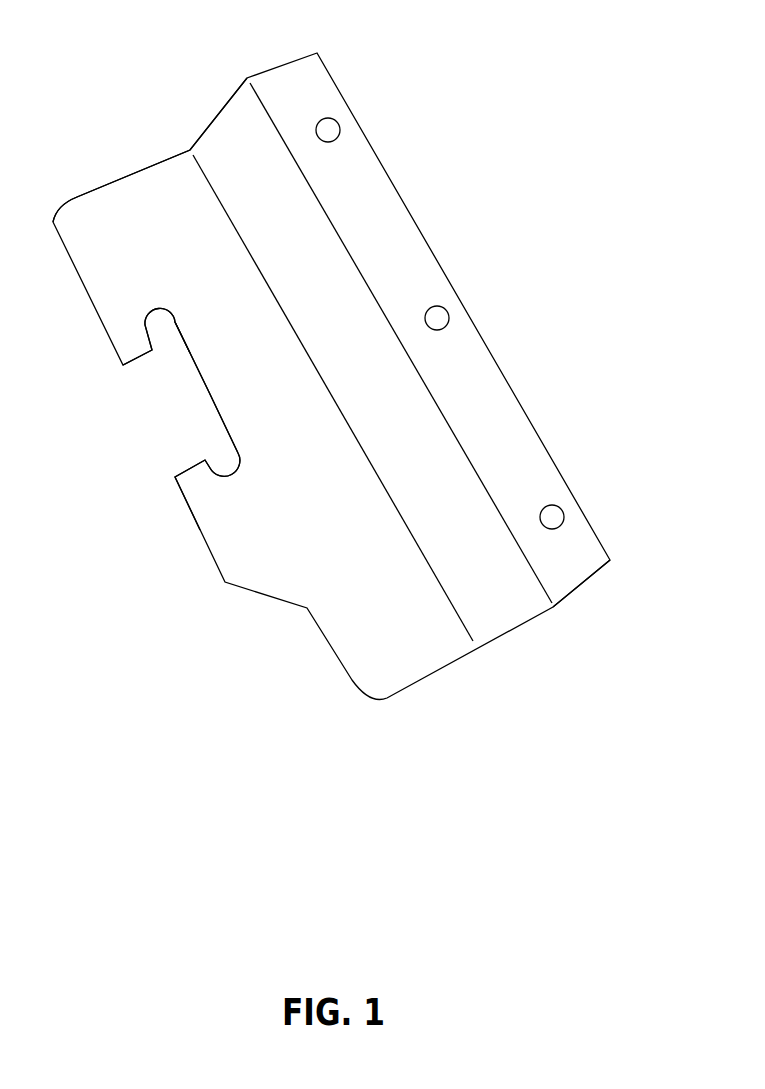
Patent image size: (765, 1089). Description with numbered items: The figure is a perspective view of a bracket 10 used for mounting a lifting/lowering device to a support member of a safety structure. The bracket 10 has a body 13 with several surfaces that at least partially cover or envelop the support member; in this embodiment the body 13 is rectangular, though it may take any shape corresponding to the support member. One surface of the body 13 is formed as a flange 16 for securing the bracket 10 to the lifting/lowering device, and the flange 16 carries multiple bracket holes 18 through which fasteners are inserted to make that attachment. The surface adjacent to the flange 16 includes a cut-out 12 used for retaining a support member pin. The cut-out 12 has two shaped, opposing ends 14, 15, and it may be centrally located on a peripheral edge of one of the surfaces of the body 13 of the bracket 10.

The bracket 10 is at (527, 296).
The cut-out 12 is at (194, 399).
The body 13 is at (160, 182).
The shaped end 14 is at (229, 484).
The shaped end 15 is at (142, 318).
The flange 16 is at (602, 578).
The bracket holes 18 is at (339, 110).